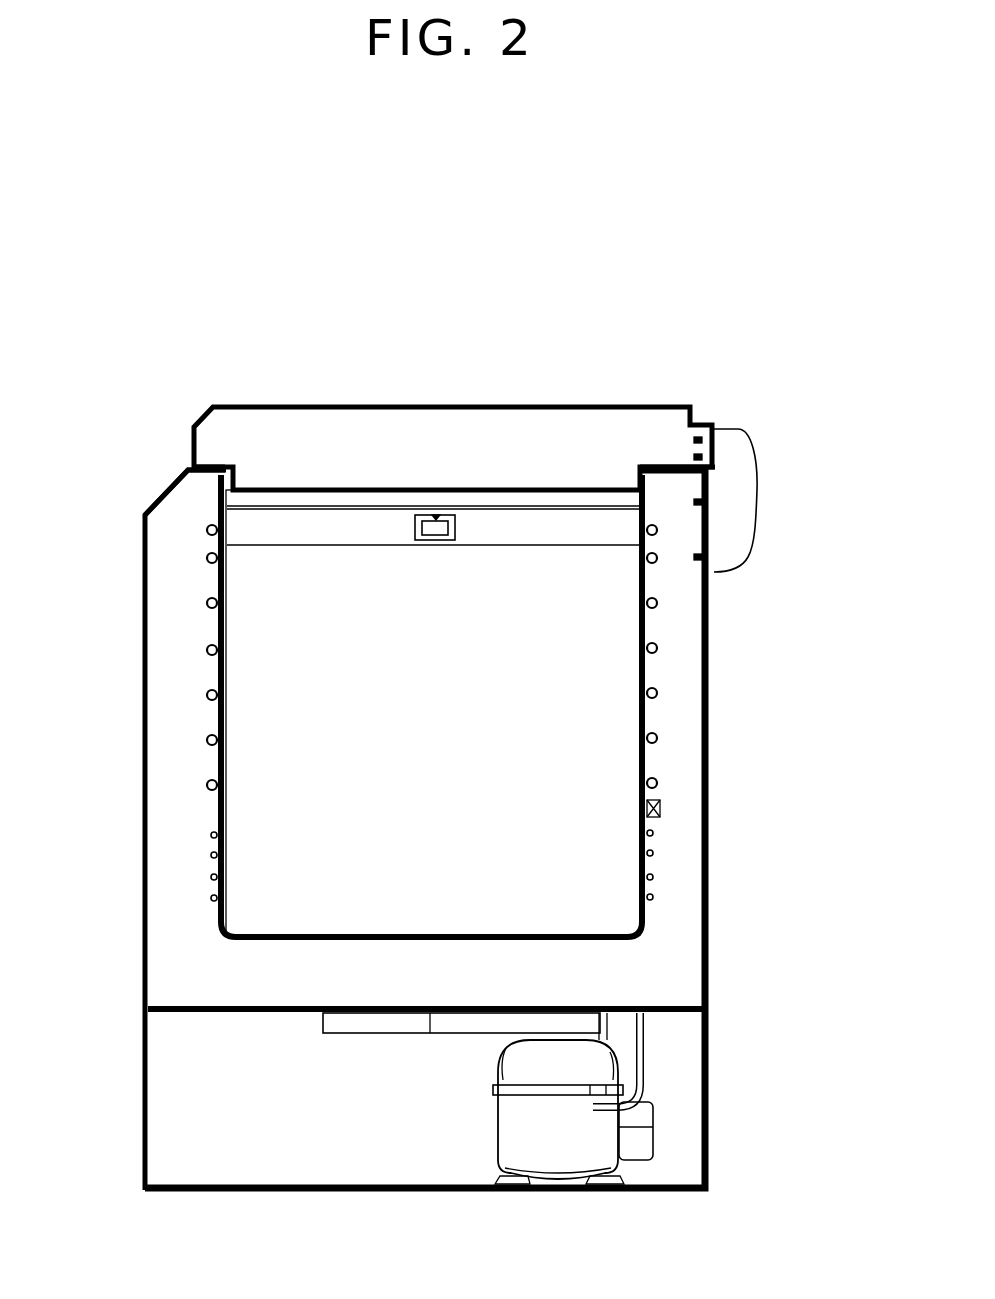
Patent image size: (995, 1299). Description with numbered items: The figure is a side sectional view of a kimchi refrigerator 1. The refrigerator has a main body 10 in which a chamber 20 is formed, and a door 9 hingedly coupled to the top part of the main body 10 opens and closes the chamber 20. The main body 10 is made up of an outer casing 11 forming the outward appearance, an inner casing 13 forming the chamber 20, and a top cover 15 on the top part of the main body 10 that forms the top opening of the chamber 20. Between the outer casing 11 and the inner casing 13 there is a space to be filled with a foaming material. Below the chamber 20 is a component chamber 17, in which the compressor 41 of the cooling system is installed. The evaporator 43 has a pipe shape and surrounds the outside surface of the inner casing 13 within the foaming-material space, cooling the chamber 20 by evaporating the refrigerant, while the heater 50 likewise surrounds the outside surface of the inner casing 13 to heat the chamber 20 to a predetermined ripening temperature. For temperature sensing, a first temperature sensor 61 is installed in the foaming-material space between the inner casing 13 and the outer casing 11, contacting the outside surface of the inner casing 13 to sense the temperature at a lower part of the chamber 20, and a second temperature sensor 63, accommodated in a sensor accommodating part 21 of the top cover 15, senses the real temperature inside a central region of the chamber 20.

The kimchi refrigerator 1 is at (846, 232).
The door 9 is at (444, 406).
The main body 10 is at (52, 713).
The outer casing 11 is at (146, 717).
The inner casing 13 is at (215, 757).
The top cover 15 is at (170, 488).
The component chamber 17 is at (393, 1109).
The chamber 20 is at (457, 731).
The sensor accommodating part 21 is at (456, 528).
The compressor 41 is at (642, 1145).
The evaporator 43 is at (658, 648).
The heater 50 is at (651, 852).
The first temperature sensor 61 is at (661, 806).
The second temperature sensor 63 is at (427, 537).